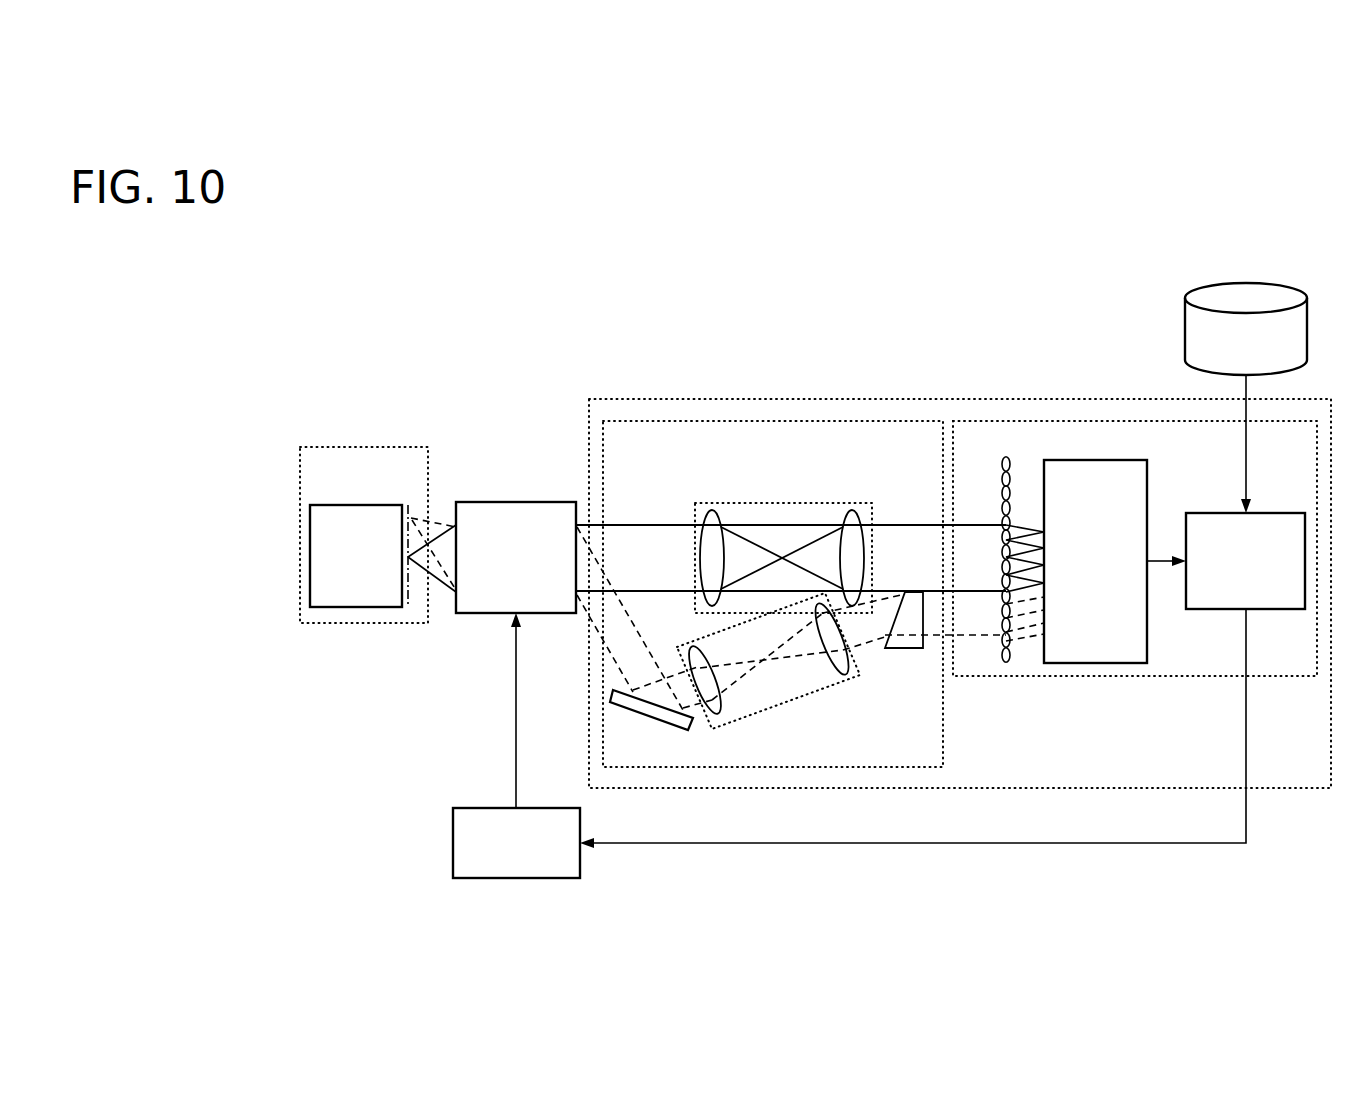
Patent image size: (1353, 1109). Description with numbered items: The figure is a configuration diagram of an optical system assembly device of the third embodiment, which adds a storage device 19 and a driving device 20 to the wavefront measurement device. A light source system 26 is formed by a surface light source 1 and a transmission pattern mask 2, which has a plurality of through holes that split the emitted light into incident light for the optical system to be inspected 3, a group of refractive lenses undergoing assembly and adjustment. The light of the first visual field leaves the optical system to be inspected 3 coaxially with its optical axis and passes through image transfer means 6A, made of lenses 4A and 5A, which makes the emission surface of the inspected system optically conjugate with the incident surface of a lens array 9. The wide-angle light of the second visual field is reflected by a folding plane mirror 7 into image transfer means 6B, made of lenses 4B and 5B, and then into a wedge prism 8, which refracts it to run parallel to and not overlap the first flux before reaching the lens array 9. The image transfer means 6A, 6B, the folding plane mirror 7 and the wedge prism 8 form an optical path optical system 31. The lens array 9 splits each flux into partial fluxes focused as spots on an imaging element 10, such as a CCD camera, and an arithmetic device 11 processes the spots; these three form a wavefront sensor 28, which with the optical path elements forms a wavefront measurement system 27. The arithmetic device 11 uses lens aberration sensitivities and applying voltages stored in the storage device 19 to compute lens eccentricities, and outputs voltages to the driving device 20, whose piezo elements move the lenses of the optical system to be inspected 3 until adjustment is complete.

The surface light source 1 is at (348, 505).
The transmission pattern mask 2 is at (407, 505).
The optical system to be inspected 3 is at (516, 502).
The lens 4A is at (710, 510).
The lens 4B is at (708, 716).
The lens 5A is at (854, 510).
The lens 5B is at (842, 677).
The image transfer means 6A is at (772, 503).
The image transfer means 6B is at (786, 712).
The folding plane mirror 7 is at (646, 714).
The wedge prism 8 is at (905, 650).
The lens array 9 is at (1003, 505).
The imaging element 10 is at (1083, 460).
The arithmetic device 11 is at (1278, 513).
The storage device 19 is at (1185, 332).
The driving device 20 is at (453, 843).
The light source system 26 is at (376, 447).
The wavefront measurement system 27 is at (697, 399).
The wavefront sensor 28 is at (1023, 421).
The optical path optical system 31 is at (886, 421).